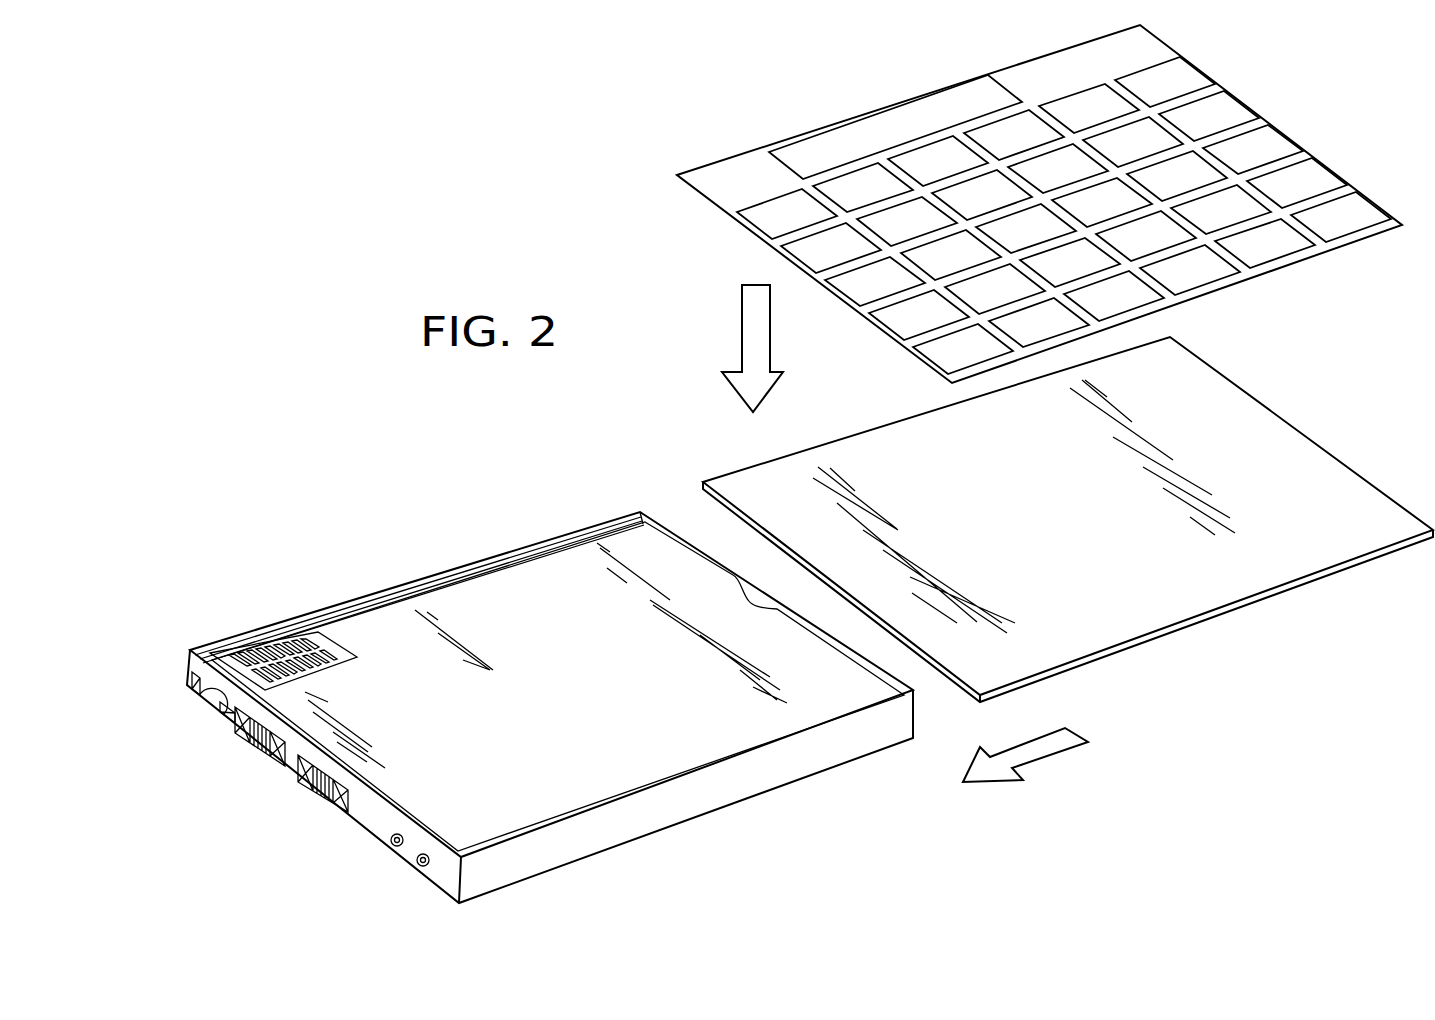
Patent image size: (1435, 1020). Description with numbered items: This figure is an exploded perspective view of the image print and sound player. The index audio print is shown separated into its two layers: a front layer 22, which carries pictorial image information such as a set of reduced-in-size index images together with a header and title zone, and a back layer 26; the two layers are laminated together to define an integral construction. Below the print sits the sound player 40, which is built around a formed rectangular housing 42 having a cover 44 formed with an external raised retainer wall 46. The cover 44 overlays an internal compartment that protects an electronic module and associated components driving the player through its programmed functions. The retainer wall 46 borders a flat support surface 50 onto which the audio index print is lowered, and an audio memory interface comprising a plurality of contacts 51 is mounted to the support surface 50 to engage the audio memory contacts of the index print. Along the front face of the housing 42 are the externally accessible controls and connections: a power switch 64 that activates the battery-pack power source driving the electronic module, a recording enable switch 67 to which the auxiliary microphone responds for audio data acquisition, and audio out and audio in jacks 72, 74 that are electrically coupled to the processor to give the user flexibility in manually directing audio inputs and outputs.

The front layer 22 is at (1290, 138).
The back layer 26 is at (1312, 437).
The sound player 40 is at (550, 694).
The housing 42 is at (678, 823).
The cover 44 is at (568, 532).
The raised retainer wall 46 is at (485, 558).
The flat support surface 50 is at (612, 688).
The contacts 51 is at (248, 667).
The power switch 64 is at (262, 743).
The recording enable switch 67 is at (323, 800).
The audio out jack 72 is at (387, 842).
The audio in jack 74 is at (417, 867).